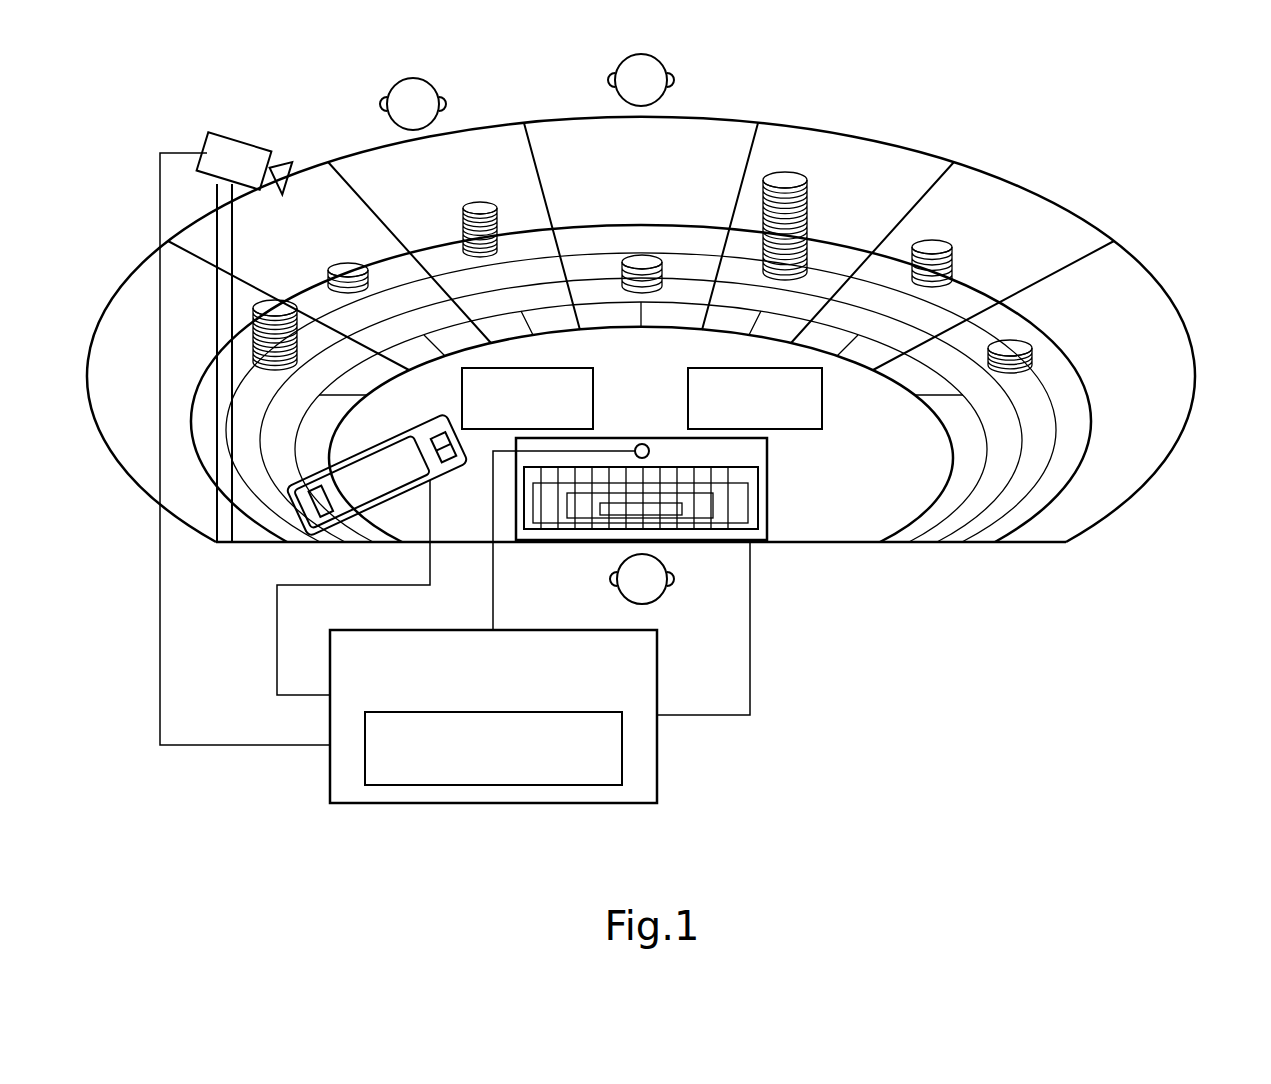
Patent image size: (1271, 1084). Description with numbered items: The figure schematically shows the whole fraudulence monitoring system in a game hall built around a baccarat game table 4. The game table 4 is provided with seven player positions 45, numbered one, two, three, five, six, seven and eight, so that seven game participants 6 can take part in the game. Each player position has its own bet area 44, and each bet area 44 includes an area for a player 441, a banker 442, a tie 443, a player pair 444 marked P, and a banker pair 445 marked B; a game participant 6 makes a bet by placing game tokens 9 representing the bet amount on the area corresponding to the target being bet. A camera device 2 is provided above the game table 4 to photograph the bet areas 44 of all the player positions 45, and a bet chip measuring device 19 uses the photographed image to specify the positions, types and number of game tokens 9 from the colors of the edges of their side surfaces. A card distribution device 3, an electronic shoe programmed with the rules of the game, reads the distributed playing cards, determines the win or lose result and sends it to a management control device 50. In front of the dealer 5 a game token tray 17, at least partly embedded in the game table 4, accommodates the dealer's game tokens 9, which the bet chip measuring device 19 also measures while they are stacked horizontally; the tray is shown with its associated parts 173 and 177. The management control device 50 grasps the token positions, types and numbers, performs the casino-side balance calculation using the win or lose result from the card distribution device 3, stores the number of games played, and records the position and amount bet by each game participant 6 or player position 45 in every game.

The camera device 2 is at (243, 140).
The card distribution device 3 is at (377, 462).
The game table 4 is at (652, 335).
The dealer 5 is at (612, 582).
The game participant 6 is at (382, 108).
The game token 9 is at (486, 202).
The game token tray 17 is at (679, 537).
The bet chip measuring device 19 is at (622, 745).
The bet area 44 is at (674, 380).
The player position 45 is at (1147, 315).
The management control device 50 is at (532, 716).
The camera of display device 173 is at (642, 444).
The display screen 177 is at (732, 480).
The player area 441 is at (1097, 380).
The banker area 442 is at (1063, 400).
The tie area 443 is at (1013, 420).
The player pair area 444 is at (943, 427).
The banker pair area 445 is at (905, 375).